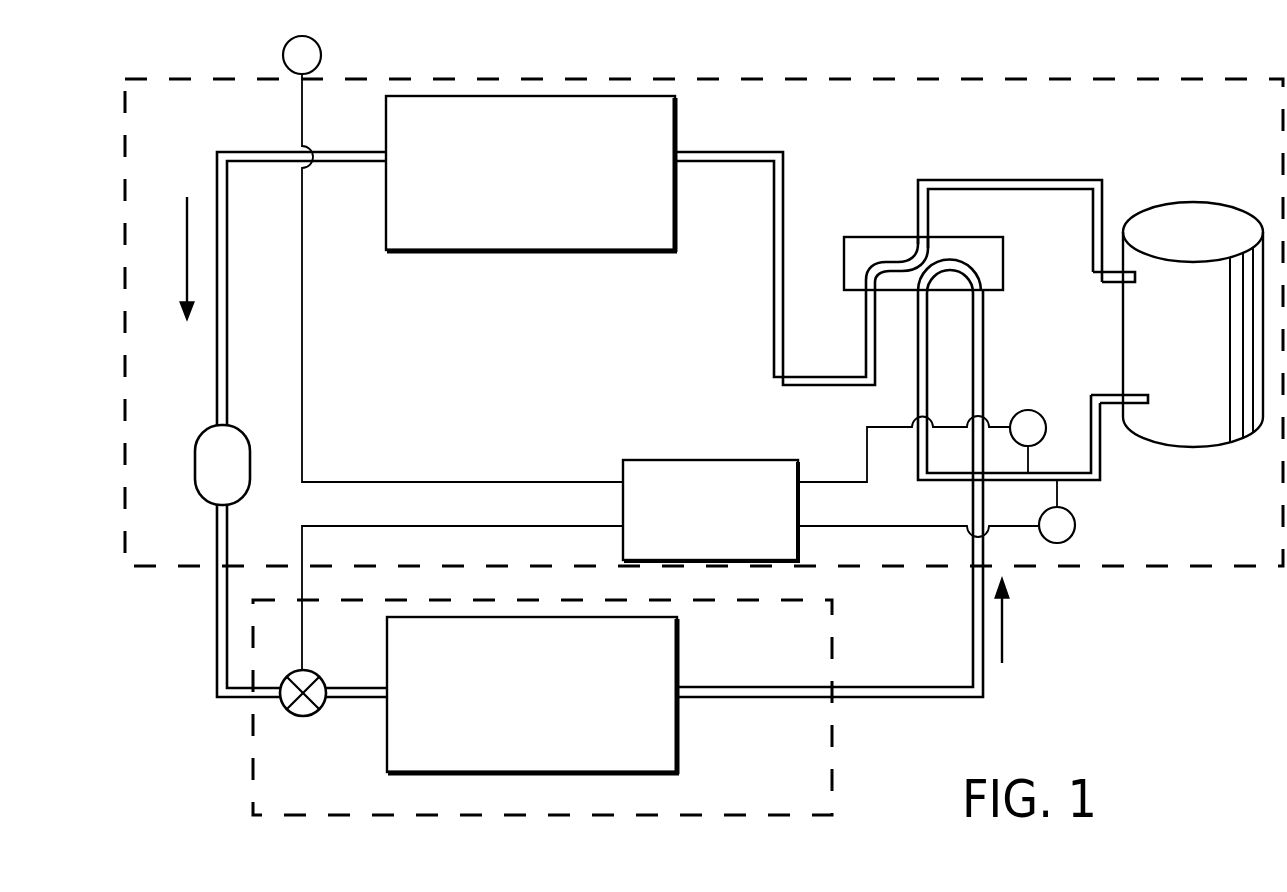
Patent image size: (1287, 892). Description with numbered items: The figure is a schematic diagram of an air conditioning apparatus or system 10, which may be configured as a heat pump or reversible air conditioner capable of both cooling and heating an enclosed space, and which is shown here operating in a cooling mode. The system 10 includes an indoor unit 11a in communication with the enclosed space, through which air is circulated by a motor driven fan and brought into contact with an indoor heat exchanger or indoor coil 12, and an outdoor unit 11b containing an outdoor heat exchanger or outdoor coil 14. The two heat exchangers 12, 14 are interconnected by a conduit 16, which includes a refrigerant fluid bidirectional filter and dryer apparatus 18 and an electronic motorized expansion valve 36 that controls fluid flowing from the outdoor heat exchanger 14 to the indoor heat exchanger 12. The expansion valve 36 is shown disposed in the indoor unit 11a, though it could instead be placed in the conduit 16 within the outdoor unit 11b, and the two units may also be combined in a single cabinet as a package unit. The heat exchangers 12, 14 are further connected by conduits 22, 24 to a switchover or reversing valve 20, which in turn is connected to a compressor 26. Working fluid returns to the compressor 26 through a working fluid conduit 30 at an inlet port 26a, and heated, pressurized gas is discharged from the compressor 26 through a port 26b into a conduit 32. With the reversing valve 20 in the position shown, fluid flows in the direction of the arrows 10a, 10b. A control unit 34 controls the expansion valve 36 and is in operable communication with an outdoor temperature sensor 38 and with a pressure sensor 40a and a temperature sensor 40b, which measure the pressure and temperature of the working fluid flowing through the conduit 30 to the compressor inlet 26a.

The air conditioning apparatus 10 is at (755, 50).
The arrow 10a is at (185, 288).
The arrow 10b is at (1002, 625).
The indoor unit 11a is at (607, 815).
The outdoor unit 11b is at (985, 76).
The indoor heat exchanger 12 is at (500, 773).
The outdoor heat exchanger 14 is at (480, 251).
The conduit 16 is at (217, 602).
The bidirectional filter and dryer apparatus 18 is at (194, 483).
The switchover or reversing valve 20 is at (882, 237).
The conduit 22 is at (745, 151).
The conduit 24 is at (1023, 354).
The compressor 26 is at (1190, 447).
The inlet port 26a is at (1115, 395).
The port 26b is at (1112, 283).
The working fluid conduit 30 is at (1082, 482).
The conduit 32 is at (1008, 180).
The control unit 34 is at (672, 460).
The electronic motorized expansion valve 36 is at (308, 716).
The outdoor temperature sensor 38 is at (321, 53).
The pressure sensor 40a is at (1057, 543).
The temperature sensor 40b is at (1053, 421).